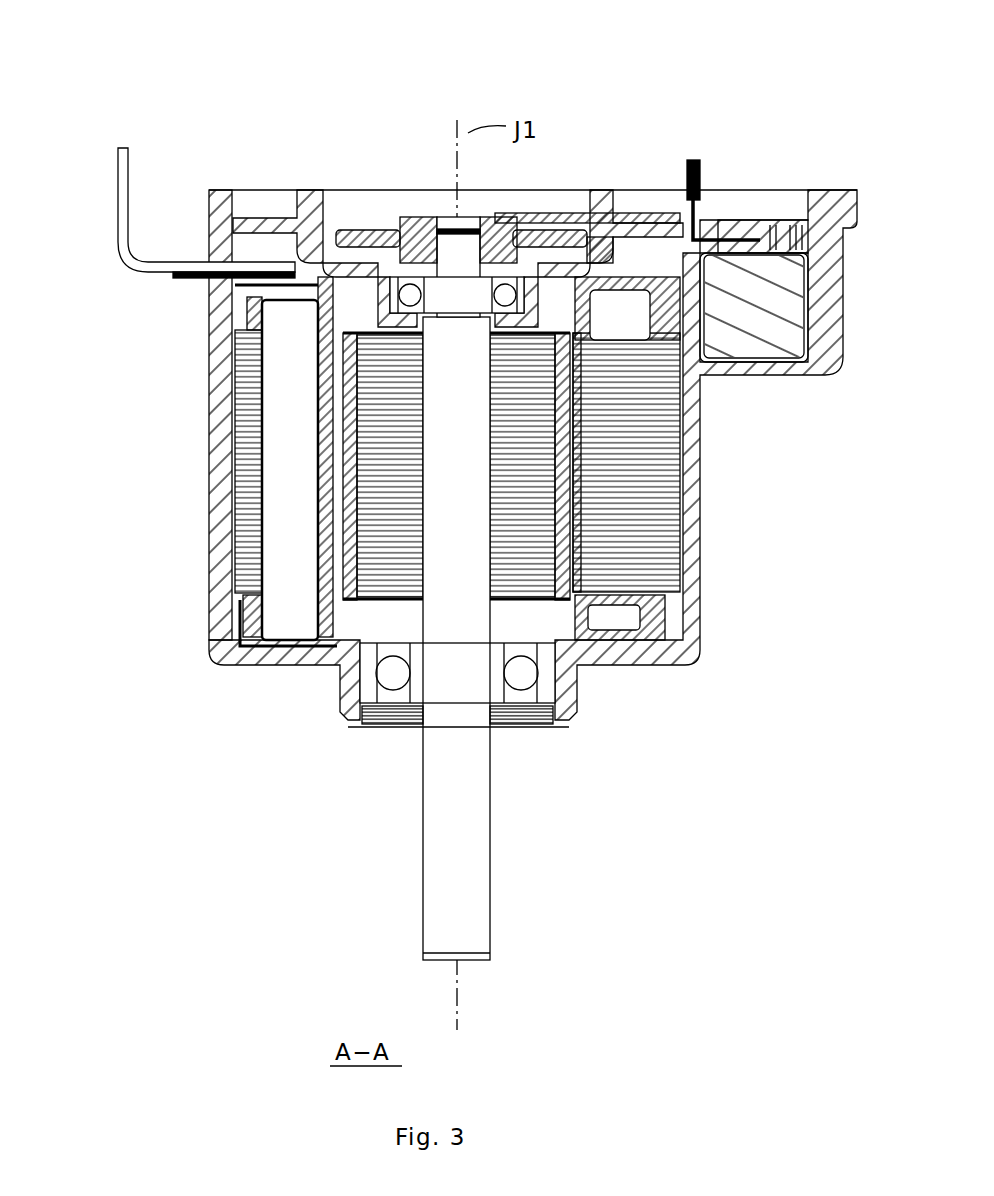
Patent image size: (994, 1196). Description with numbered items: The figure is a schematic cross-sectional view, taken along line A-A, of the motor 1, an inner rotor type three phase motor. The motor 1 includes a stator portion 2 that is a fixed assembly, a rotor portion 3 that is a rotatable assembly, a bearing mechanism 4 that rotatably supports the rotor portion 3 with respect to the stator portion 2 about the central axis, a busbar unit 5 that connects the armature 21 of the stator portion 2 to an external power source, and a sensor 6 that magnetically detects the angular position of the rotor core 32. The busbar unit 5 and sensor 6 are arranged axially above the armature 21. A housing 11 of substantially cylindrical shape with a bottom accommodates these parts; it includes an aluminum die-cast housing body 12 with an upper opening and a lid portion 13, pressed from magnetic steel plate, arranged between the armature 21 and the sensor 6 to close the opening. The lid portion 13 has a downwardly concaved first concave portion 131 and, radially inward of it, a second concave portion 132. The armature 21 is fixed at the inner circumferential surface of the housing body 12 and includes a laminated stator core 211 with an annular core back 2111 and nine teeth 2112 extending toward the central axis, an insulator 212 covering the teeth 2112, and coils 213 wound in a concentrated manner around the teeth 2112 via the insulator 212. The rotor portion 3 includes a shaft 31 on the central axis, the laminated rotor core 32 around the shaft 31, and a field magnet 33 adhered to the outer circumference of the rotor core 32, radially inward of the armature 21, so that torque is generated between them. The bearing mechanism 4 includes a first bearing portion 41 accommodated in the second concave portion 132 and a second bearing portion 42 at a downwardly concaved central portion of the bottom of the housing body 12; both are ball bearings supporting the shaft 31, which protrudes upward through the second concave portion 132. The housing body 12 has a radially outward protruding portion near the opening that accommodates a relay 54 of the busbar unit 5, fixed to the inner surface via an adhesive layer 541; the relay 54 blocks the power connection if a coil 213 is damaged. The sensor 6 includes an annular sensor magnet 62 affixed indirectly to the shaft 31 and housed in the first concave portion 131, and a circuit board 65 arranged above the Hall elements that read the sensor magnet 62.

The motor 1 is at (203, 143).
The stator portion 2 is at (441, 458).
The armature 21 is at (456, 455).
The stator core 211 is at (375, 458).
The core back 2111 is at (250, 459).
The teeth 2112 is at (330, 443).
The insulator 212 is at (243, 618).
The coils 213 is at (295, 618).
The housing 11 is at (145, 340).
The housing body 12 is at (226, 370).
The lid portion 13 is at (212, 322).
The first concave portion 131 is at (362, 229).
The second concave portion 132 is at (440, 285).
The rotor portion 3 is at (618, 596).
The shaft 31 is at (497, 420).
The rotor core 32 is at (530, 447).
The field magnet 33 is at (557, 478).
The bearing mechanism 4 is at (458, 404).
The first bearing portion 41 is at (524, 280).
The second bearing portion 42 is at (371, 693).
The busbar unit 5 is at (728, 222).
The relay 54 is at (801, 325).
The adhesive layer 541 is at (763, 357).
The sensor 6 is at (597, 167).
The sensor magnet 62 is at (571, 240).
The circuit board 65 is at (598, 214).